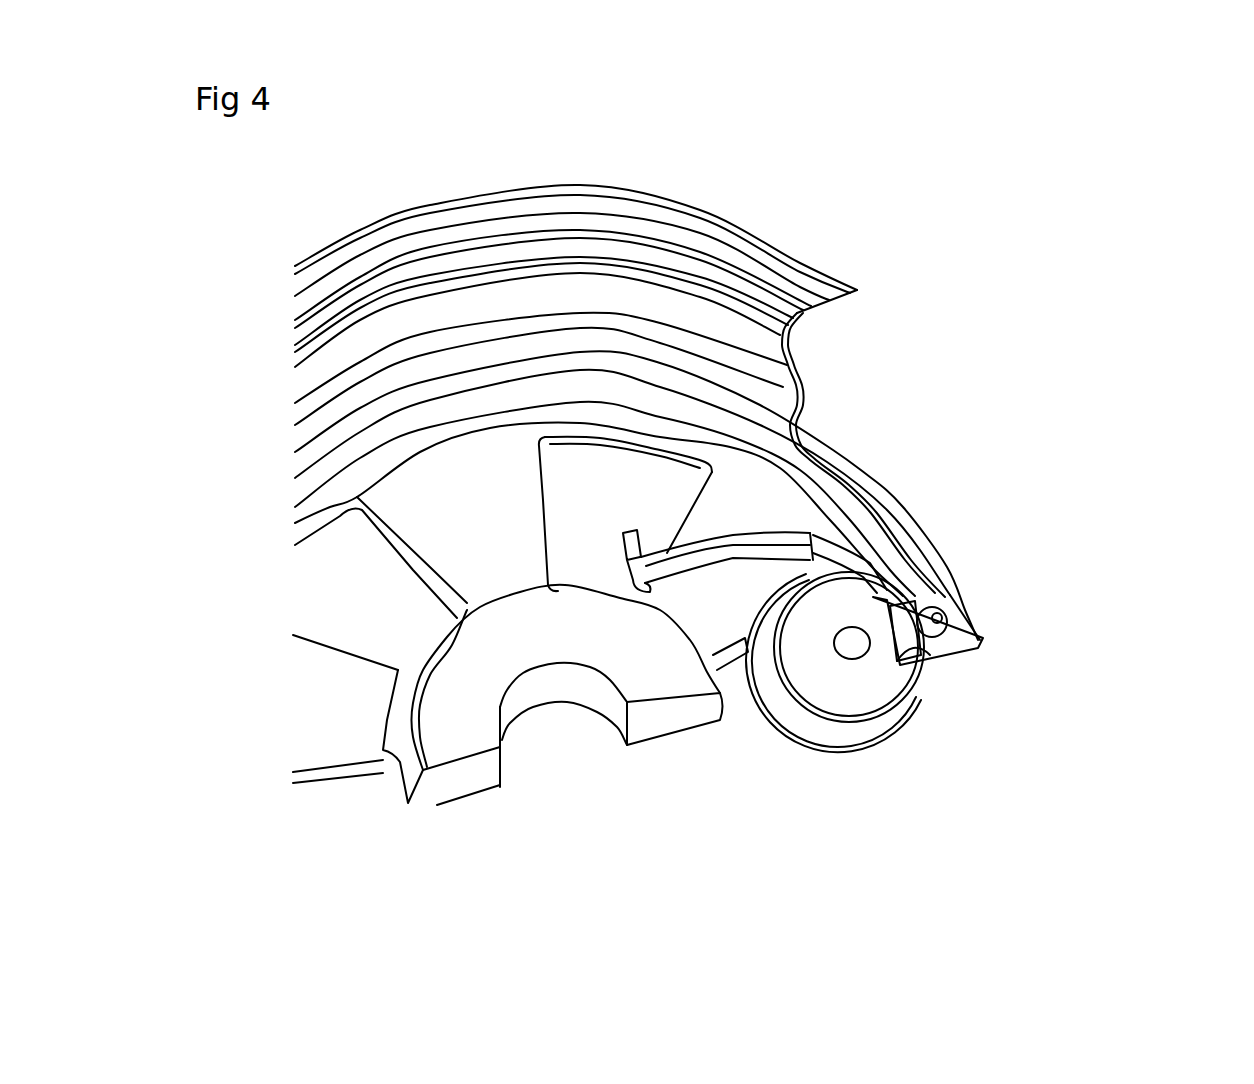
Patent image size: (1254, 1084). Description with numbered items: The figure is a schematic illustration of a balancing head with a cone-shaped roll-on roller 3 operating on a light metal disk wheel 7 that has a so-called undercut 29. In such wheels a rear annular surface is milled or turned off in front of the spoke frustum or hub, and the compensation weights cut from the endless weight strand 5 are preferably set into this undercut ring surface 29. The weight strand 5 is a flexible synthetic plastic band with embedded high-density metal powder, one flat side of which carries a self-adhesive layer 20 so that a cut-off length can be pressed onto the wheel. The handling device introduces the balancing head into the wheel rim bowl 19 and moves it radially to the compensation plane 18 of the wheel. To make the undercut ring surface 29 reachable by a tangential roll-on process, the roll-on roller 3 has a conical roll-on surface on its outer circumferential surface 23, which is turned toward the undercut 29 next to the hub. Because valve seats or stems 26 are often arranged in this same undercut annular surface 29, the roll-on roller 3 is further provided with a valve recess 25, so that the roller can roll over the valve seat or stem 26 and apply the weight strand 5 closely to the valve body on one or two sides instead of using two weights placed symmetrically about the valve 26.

The roll-on roller 3 is at (802, 638).
The endless weight strand 5 is at (690, 505).
The disk wheel 7 is at (773, 233).
The compensation plane 18 is at (770, 477).
The wheel rim bowl 19 is at (672, 381).
The self-adhesive layer 20 is at (880, 592).
The outer circumferential surface 23 is at (832, 725).
The valve recess 25 is at (885, 608).
The valve seat or stem 26 is at (937, 627).
The undercut 29 is at (933, 657).